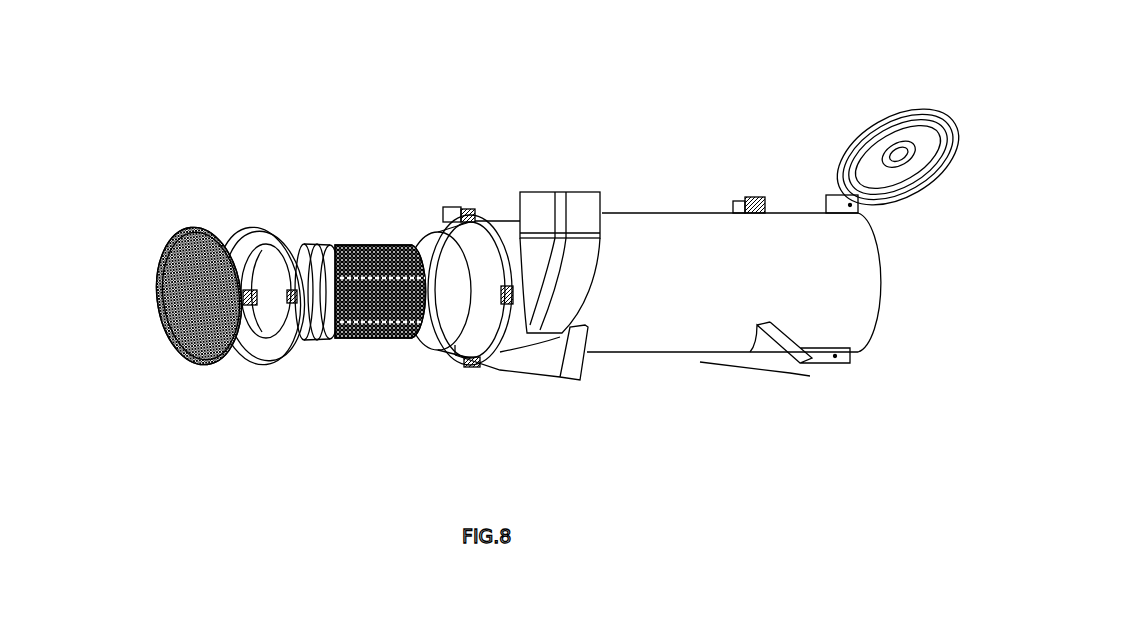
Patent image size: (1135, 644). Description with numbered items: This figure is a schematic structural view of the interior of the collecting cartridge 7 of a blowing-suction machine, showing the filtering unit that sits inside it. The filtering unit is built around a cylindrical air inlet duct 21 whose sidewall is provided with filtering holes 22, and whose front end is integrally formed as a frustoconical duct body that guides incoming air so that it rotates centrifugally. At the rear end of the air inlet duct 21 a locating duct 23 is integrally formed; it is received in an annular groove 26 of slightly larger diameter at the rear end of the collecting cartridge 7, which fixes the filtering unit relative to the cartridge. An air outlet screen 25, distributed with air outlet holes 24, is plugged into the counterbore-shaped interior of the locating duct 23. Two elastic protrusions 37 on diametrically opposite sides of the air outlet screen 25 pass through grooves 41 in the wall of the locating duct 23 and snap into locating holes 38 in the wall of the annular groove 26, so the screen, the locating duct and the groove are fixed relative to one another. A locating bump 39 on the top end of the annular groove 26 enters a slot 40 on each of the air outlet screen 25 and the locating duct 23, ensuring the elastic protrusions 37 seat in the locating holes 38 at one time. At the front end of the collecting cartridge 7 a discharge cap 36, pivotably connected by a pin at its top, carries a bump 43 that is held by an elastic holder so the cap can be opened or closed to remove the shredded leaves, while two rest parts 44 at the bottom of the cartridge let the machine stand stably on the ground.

The collecting cartridge 7 is at (648, 320).
The air inlet duct 21 is at (320, 245).
The filtering holes 22 is at (383, 345).
The locating duct 23 is at (290, 230).
The air outlet holes 24 is at (160, 293).
The air outlet screen 25 is at (190, 335).
The annular groove 26 is at (468, 355).
The discharge cap 36 is at (848, 165).
The elastic protrusions 37 is at (247, 335).
The locating holes 38 is at (530, 240).
The locating bump 39 is at (455, 207).
The slot 40 is at (237, 230).
The grooves 41 is at (303, 350).
The bump 43 is at (953, 110).
The rest parts 44 is at (763, 352).